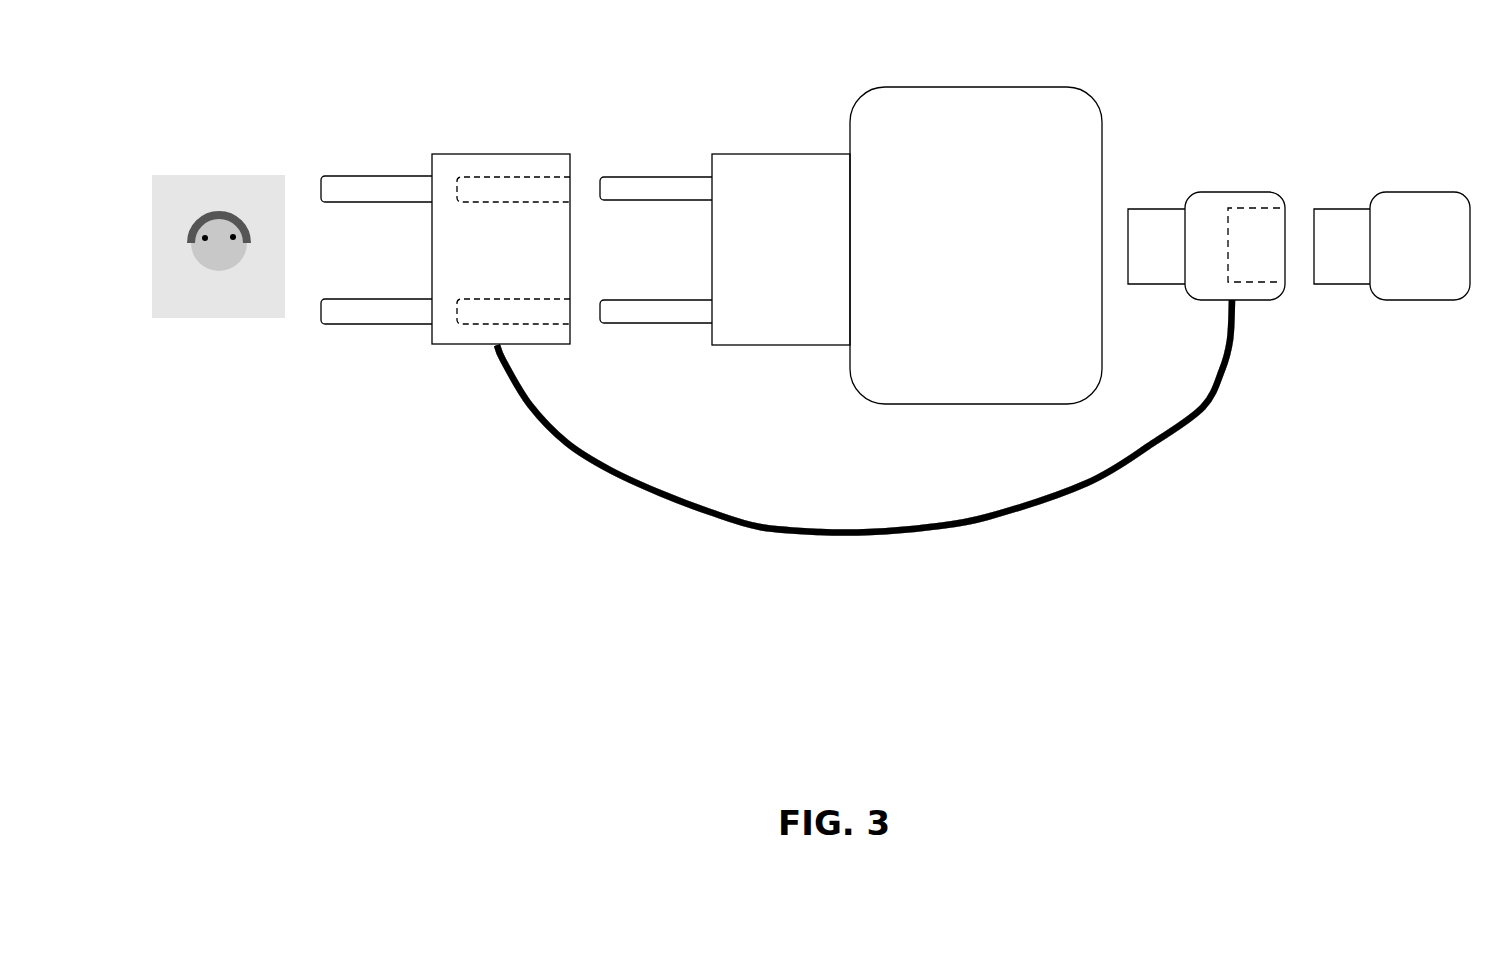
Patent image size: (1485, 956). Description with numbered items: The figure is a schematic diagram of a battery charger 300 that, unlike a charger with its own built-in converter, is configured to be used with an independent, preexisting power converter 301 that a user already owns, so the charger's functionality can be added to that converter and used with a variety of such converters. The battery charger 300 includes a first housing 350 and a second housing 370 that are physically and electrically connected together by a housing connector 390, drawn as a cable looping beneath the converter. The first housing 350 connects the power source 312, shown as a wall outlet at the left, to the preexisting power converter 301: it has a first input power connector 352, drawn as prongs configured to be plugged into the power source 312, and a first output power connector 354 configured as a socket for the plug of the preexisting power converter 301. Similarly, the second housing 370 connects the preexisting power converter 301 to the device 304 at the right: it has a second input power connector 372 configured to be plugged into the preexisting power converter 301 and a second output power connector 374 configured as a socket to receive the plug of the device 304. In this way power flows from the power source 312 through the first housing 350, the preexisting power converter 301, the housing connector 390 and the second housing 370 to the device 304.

The battery charger 300 is at (402, 503).
The preexisting power converter 301 is at (851, 245).
The device 304 is at (1392, 246).
The power source 312 is at (135, 182).
The first housing 350 is at (455, 165).
The first input power connector 352 is at (340, 188).
The first output power connector 354 is at (537, 195).
The second housing 370 is at (1210, 198).
The second input power connector 372 is at (1142, 238).
The second output power connector 374 is at (1272, 232).
The housing connector 390 is at (765, 527).